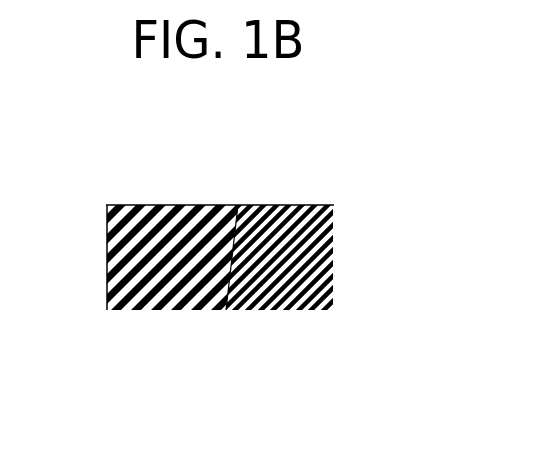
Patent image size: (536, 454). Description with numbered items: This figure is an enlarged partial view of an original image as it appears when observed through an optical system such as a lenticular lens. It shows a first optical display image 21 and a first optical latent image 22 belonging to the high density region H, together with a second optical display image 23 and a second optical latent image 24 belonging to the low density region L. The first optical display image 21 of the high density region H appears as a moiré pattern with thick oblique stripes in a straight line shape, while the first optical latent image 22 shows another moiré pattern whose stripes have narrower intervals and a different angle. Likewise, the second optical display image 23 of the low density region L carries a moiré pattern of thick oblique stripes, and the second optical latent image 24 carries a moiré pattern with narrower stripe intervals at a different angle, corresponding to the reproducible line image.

The first optical display image 21 is at (261, 311).
The first optical latent image 22 is at (322, 278).
The second optical display image 23 is at (171, 309).
The second optical latent image 24 is at (153, 212).
The high density region H is at (243, 228).
The low density region L is at (107, 280).